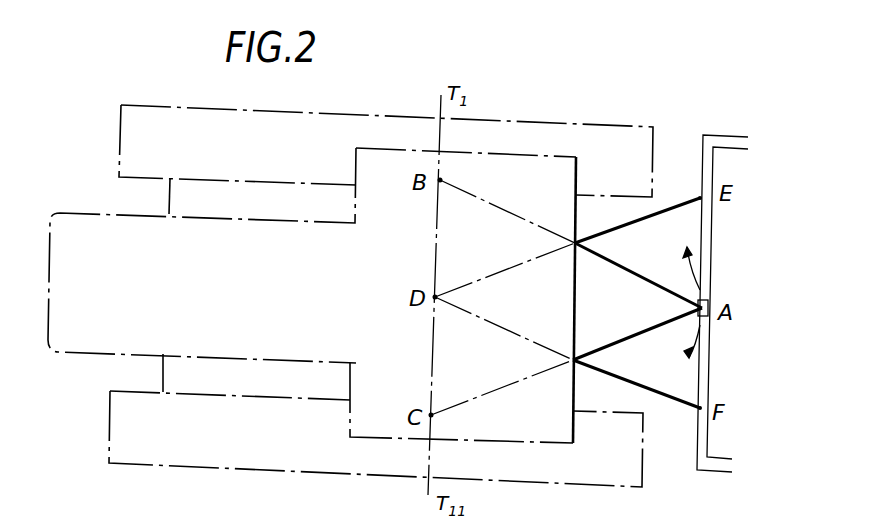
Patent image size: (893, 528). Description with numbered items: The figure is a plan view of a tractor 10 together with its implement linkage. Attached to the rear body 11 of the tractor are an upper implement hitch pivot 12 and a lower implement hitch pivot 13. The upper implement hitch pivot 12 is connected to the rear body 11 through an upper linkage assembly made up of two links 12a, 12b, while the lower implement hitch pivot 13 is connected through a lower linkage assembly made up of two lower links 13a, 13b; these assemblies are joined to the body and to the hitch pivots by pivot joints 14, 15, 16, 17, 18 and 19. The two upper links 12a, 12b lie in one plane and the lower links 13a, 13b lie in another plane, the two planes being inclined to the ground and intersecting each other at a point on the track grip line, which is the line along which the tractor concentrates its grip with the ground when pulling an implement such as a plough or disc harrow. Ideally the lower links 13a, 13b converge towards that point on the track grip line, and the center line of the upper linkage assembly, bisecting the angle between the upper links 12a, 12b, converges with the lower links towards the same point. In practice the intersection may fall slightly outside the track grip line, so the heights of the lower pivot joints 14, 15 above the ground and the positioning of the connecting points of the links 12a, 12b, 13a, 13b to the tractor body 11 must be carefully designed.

The tractor 10 is at (109, 360).
The rear body 11 is at (578, 322).
The upper implement hitch pivot 12 is at (640, 307).
The upper link 12a is at (630, 267).
The upper link 12b is at (620, 339).
The lower implement hitch pivot 13 is at (637, 301).
The lower link 13a is at (605, 228).
The lower link 13b is at (701, 380).
The pivot joint 14 is at (699, 196).
The pivot joint 15 is at (691, 412).
The pivot joint 16 is at (570, 364).
The pivot joint 17 is at (574, 241).
The pivot joint 18 is at (574, 241).
The pivot joint 19 is at (570, 364).